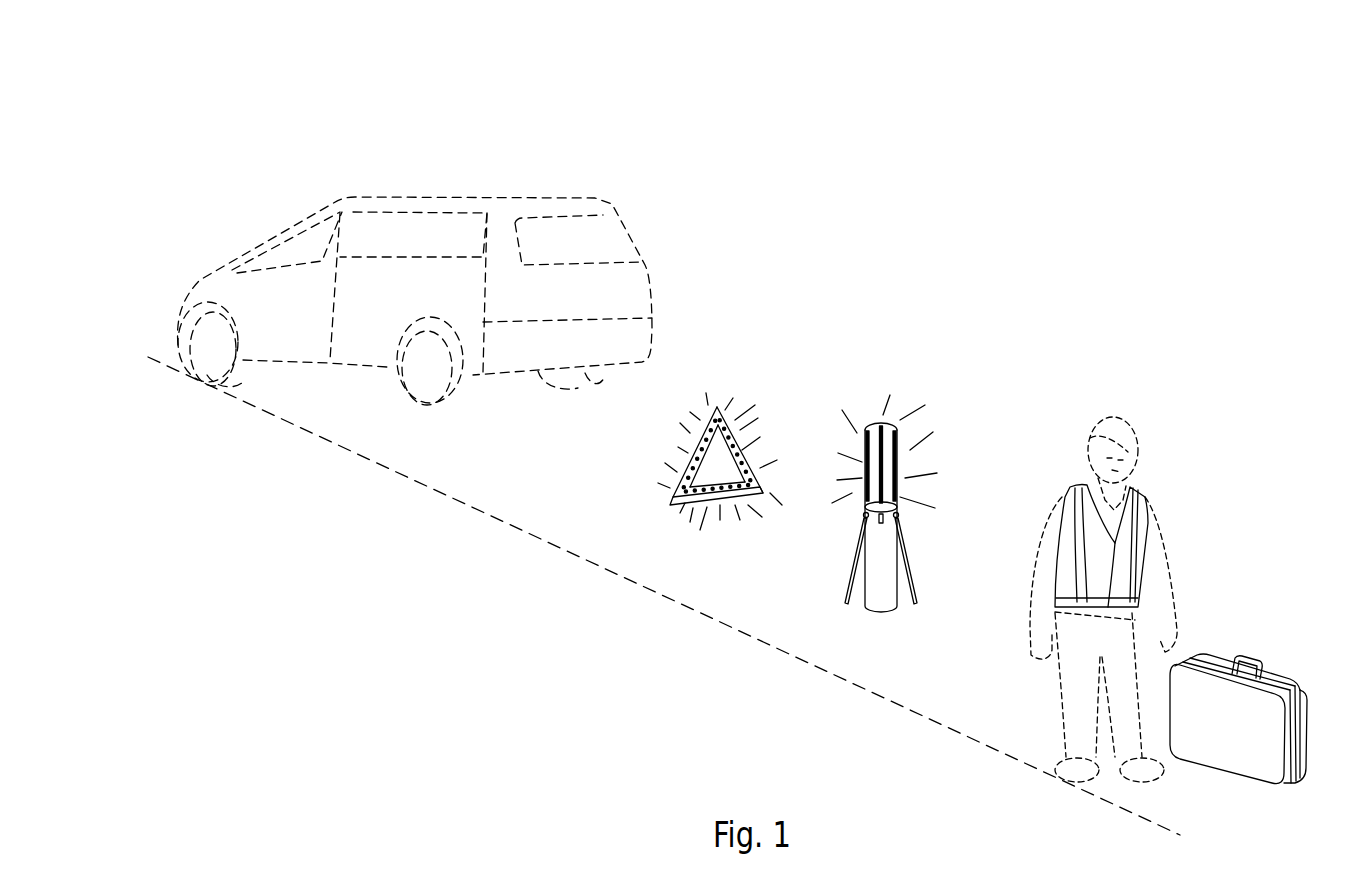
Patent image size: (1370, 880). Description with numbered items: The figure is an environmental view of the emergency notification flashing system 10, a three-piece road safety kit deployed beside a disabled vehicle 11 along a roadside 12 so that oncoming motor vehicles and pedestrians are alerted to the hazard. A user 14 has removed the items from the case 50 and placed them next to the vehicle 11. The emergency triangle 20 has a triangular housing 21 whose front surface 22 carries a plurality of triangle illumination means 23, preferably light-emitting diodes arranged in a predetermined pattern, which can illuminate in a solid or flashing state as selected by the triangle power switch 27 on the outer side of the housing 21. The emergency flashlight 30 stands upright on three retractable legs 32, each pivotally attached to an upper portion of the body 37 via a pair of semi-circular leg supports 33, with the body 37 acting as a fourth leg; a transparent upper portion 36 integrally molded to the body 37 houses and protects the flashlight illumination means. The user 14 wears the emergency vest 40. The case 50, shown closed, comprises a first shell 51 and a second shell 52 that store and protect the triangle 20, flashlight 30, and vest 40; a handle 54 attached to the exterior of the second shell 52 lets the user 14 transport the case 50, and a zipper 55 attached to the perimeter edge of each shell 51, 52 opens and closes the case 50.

The emergency notification flashing system 10 is at (1138, 147).
The vehicle 11 is at (547, 198).
The roadside 12 is at (393, 537).
The user 14 is at (1110, 418).
The emergency triangle 20 is at (727, 393).
The triangular housing 21 is at (697, 450).
The front surface 22 is at (688, 502).
The triangle illumination means 23 is at (742, 450).
The triangle power switch 27 is at (676, 496).
The emergency flashlight 30 is at (902, 448).
The retractable legs 32 is at (853, 560).
The semi-circular leg supports 33 is at (884, 520).
The transparent upper portion 36 is at (895, 425).
The body 37 is at (888, 590).
The emergency vest 40 is at (1188, 440).
The case 50 is at (1256, 664).
The first shell 51 is at (1226, 748).
The second shell 52 is at (1222, 665).
The handle 54 is at (1262, 672).
The zipper 55 is at (1300, 774).